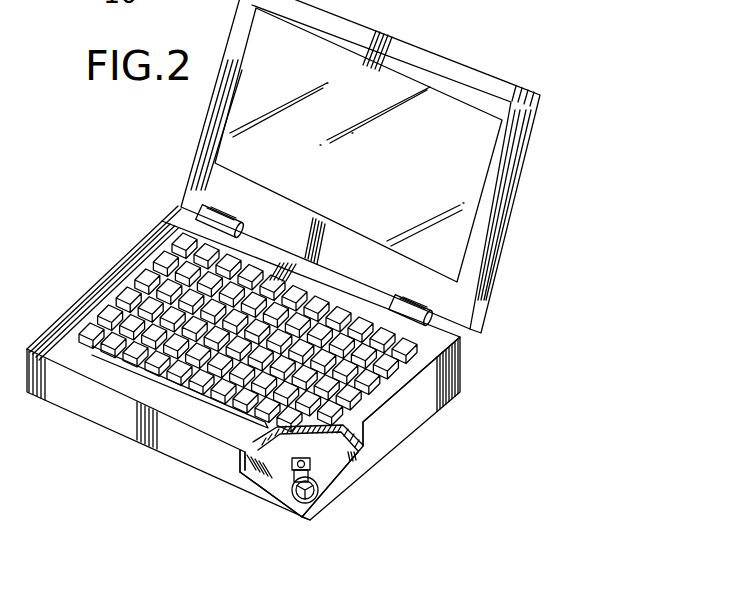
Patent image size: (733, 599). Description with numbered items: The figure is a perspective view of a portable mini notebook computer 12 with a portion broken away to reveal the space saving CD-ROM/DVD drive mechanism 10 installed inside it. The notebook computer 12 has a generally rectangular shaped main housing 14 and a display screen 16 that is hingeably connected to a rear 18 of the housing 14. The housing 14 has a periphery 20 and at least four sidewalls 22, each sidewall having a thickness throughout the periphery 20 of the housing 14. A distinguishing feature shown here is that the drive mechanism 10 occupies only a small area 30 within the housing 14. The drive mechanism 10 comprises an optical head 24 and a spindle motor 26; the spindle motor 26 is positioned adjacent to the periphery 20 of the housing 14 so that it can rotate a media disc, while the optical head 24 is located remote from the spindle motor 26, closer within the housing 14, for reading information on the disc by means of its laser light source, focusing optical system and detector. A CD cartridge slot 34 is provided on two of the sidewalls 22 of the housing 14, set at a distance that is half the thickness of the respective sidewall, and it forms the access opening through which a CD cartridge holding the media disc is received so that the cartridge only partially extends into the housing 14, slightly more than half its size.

The CD-ROM/DVD drive mechanism 10 is at (280, 479).
The portable mini notebook computer 12 is at (470, 14).
The main housing 14 is at (127, 260).
The display screen 16 is at (511, 208).
The rear 18 is at (463, 363).
The periphery 20 is at (57, 390).
The sidewalls 22 is at (122, 420).
The optical head 24 is at (312, 463).
The spindle motor 26 is at (317, 497).
The small area 30 is at (360, 423).
The CD cartridge slot 34 is at (243, 493).